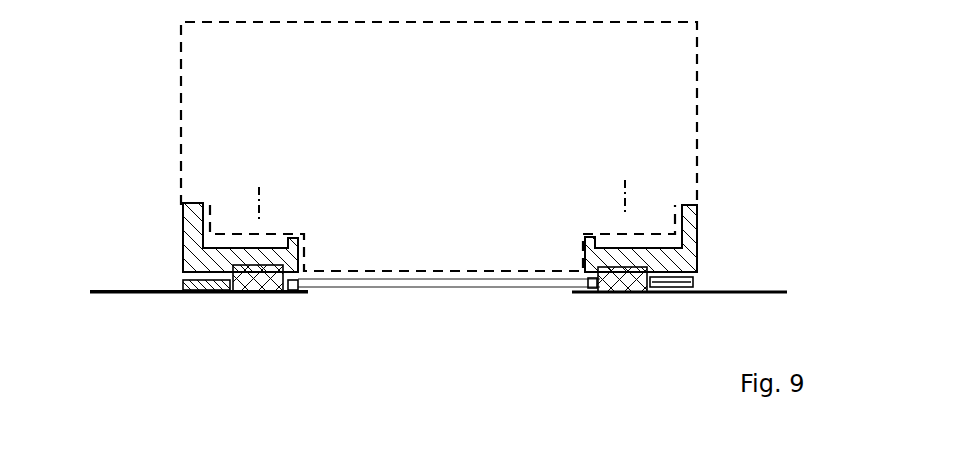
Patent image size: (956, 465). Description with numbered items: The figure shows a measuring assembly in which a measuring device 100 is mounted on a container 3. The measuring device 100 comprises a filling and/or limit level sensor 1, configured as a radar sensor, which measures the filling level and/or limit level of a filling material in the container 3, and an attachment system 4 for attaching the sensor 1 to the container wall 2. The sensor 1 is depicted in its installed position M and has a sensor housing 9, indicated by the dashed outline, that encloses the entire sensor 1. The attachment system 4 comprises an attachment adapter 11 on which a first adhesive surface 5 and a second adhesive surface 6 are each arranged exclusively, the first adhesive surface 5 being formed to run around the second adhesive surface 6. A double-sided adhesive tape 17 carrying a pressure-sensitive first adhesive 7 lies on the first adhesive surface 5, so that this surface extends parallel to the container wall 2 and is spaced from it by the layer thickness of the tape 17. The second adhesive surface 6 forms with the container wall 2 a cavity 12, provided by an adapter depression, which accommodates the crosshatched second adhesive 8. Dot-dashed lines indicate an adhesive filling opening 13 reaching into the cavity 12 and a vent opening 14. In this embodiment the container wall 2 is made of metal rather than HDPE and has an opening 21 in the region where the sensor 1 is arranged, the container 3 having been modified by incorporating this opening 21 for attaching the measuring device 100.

The filling and/or limit level sensor 1 is at (772, 115).
The container wall 2 is at (122, 293).
The container 3 is at (165, 294).
The attachment system 4 is at (764, 218).
The first adhesive surface 5 is at (202, 293).
The second adhesive surface 6 is at (243, 290).
The first adhesive 7 is at (600, 293).
The second adhesive 8 is at (268, 290).
The sensor housing 9 is at (698, 82).
The attachment adapter 11 is at (203, 258).
The cavity 12 is at (290, 290).
The adhesive filling opening 13 is at (252, 208).
The vent opening 14 is at (627, 207).
The double-sided adhesive tape 17 is at (704, 283).
The opening 21 is at (445, 296).
The measuring device 100 is at (145, 143).
The installed position M is at (143, 85).